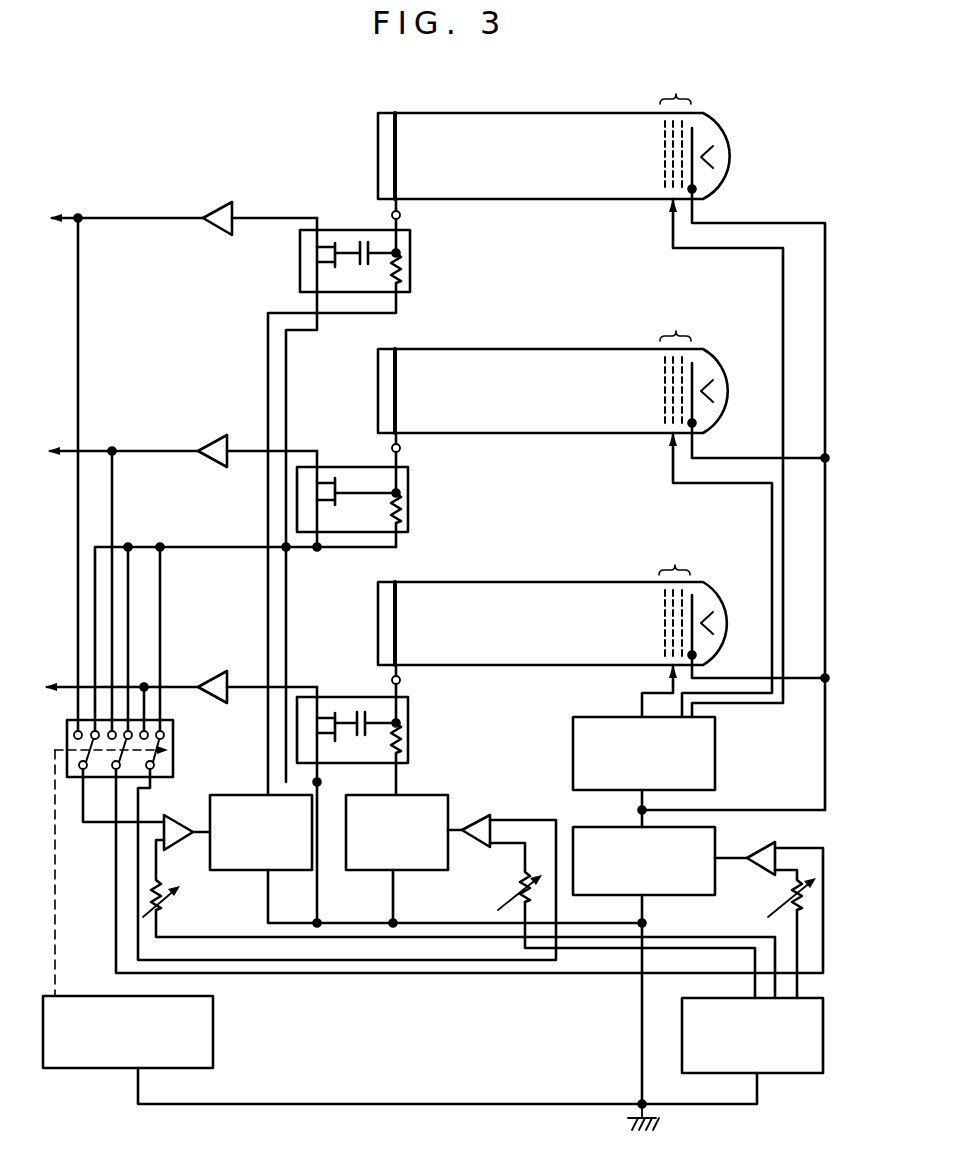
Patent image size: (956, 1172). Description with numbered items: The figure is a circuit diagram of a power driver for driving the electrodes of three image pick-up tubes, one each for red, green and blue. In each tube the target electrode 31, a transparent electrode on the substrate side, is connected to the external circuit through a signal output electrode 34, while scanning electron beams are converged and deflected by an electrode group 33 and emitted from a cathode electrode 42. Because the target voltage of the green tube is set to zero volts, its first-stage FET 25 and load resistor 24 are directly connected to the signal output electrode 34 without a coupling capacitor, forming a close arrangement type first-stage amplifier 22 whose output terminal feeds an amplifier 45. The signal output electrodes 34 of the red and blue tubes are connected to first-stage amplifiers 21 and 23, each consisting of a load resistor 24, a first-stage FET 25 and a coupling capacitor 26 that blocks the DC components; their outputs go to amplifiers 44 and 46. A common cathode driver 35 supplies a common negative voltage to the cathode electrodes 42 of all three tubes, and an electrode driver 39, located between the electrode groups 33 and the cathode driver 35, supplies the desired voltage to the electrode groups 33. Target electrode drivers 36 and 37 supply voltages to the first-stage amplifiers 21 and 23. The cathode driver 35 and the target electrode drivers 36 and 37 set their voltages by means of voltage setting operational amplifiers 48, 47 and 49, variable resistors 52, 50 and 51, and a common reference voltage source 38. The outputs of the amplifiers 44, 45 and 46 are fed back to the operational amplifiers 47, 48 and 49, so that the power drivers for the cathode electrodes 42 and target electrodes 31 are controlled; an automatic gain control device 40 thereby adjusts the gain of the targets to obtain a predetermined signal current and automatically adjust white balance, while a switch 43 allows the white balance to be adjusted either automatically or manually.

The first-stage amplifier 21 is at (411, 276).
The first-stage amplifier 22 is at (410, 518).
The first-stage amplifier 23 is at (411, 764).
The load resistor 24 is at (404, 259).
The first-stage FET 25 is at (301, 254).
The coupling capacitor 26 is at (364, 240).
The target electrode 31 is at (402, 130).
The electrode group 33 is at (674, 85).
The signal output electrode 34 is at (401, 215).
The cathode driver 35 is at (598, 827).
The target electrode driver 36 is at (230, 872).
The target electrode driver 37 is at (360, 872).
The reference voltage source 38 is at (680, 1042).
The electrode driver 39 is at (717, 753).
The automatic gain control device 40 is at (215, 1041).
The cathode electrode 42 is at (692, 128).
The switch 43 is at (178, 743).
The amplifier 44 is at (218, 201).
The amplifier 45 is at (217, 434).
The amplifier 46 is at (217, 672).
The voltage setting operational amplifier 47 is at (184, 813).
The voltage setting operational amplifier 48 is at (756, 871).
The voltage setting operational amplifier 49 is at (478, 846).
The variable resistor 50 is at (166, 913).
The variable resistor 51 is at (500, 894).
The variable resistor 52 is at (775, 898).